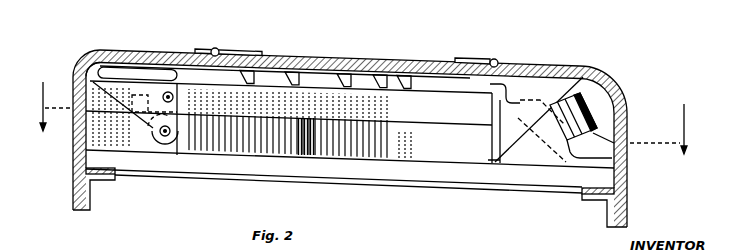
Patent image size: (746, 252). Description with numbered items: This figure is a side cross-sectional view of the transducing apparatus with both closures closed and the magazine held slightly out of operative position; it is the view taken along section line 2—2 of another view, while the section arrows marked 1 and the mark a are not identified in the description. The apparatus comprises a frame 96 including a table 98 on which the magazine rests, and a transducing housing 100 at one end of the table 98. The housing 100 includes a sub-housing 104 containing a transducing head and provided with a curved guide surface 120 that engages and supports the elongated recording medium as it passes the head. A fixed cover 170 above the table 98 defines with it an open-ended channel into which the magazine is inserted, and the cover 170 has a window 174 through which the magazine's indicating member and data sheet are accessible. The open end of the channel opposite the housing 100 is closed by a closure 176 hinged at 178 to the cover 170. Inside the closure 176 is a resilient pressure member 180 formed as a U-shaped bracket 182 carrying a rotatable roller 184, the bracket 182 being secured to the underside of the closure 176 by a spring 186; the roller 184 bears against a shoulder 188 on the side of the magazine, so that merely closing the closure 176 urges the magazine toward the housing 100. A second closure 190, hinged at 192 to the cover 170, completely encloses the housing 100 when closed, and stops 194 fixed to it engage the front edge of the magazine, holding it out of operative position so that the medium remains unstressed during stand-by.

The section line 2— 2 is at (415, 160).
The film roll a is at (414, 103).
The section line 1- 1 is at (359, 110).
The frame 96 is at (630, 210).
The table 98 is at (487, 178).
The transducing housing 100 is at (522, 164).
The sub-housing 104 is at (511, 162).
The curved guide surface 120 is at (598, 140).
The fixed cover 170 is at (332, 62).
The window 174 is at (289, 74).
The closure 176 is at (143, 67).
The hinge 178 is at (216, 50).
The resilient pressure member 180 is at (127, 124).
The U-shaped bracket 182 is at (95, 84).
The roller 184 is at (176, 143).
The spring 186 is at (174, 70).
The shoulder 188 is at (192, 102).
The second closure 190 is at (611, 88).
The hinge 192 is at (501, 67).
The stop 194 is at (551, 95).